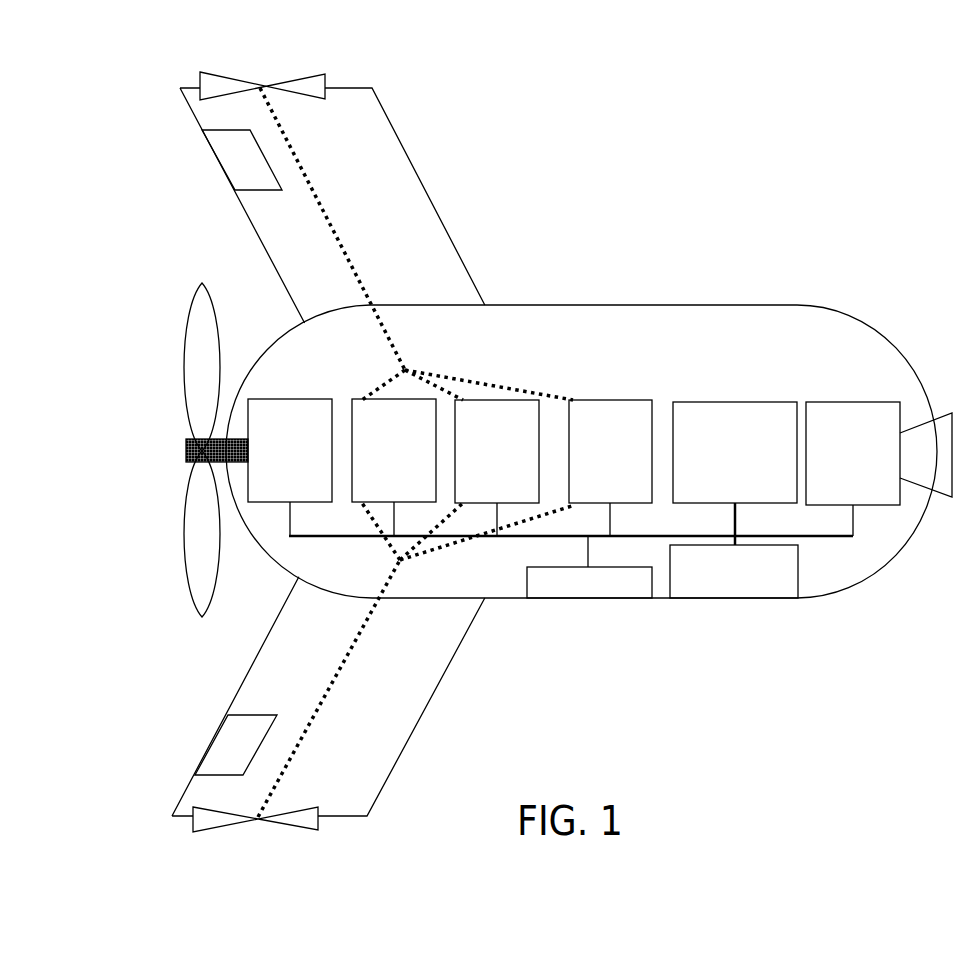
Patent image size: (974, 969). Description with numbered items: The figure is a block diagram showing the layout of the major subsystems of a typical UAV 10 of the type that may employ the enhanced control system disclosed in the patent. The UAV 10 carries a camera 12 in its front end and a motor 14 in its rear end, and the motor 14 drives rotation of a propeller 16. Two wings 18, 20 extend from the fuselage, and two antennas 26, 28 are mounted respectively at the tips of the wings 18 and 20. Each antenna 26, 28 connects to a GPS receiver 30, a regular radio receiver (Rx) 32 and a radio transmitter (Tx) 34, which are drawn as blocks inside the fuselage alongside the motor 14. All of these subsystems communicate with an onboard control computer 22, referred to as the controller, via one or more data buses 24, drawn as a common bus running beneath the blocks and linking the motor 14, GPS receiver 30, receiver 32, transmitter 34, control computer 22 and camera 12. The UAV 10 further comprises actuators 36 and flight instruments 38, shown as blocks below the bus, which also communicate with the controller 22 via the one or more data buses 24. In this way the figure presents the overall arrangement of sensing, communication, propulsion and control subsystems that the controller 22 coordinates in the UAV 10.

The UAV 10 is at (723, 237).
The camera 12 is at (857, 402).
The motor 14 is at (316, 398).
The propeller 16 is at (190, 552).
The wing 18 is at (457, 247).
The wing 20 is at (383, 783).
The onboard control computer 22 is at (737, 402).
The data bus 24 is at (818, 538).
The antenna 26 is at (260, 87).
The antenna 28 is at (285, 825).
The GPS receiver 30 is at (392, 398).
The radio receiver 32 is at (498, 400).
The radio transmitter 34 is at (611, 400).
The actuators 36 is at (590, 598).
The flight instruments 38 is at (747, 598).